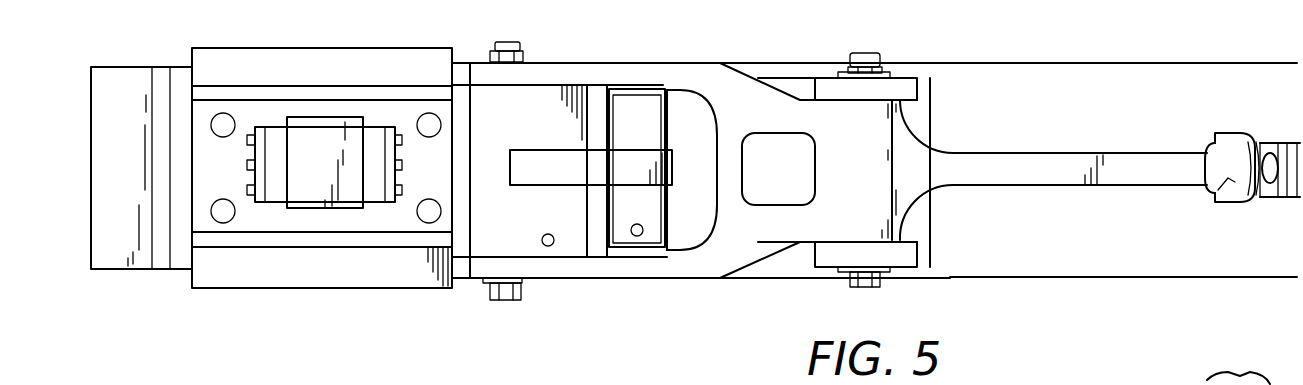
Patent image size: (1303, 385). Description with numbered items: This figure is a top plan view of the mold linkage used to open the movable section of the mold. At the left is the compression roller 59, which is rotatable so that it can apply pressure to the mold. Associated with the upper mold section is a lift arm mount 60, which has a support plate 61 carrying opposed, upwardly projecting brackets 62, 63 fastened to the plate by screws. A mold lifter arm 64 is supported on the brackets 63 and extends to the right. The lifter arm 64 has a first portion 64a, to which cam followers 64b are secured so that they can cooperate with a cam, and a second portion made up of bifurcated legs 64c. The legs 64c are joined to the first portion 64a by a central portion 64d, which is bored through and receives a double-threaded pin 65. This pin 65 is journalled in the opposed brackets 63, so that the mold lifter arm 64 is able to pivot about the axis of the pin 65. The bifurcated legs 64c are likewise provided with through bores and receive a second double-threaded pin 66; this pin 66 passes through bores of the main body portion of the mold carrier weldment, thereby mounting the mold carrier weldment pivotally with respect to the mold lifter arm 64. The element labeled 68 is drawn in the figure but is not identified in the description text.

The compression roller 59 is at (333, 137).
The lift arm mount 60 is at (1127, 260).
The support plate 61 is at (917, 230).
The bracket 62 is at (657, 232).
The bracket 63 is at (830, 258).
The mold lifter arm 64 is at (953, 138).
The first portion 64a is at (1110, 175).
The cam follower 64b is at (1207, 197).
The bifurcated leg 64c is at (567, 75).
The central portion 64d is at (892, 107).
The double-threaded pin 65 is at (888, 268).
The double-threaded pin 66 is at (488, 285).
The cross bar 68 is at (627, 165).